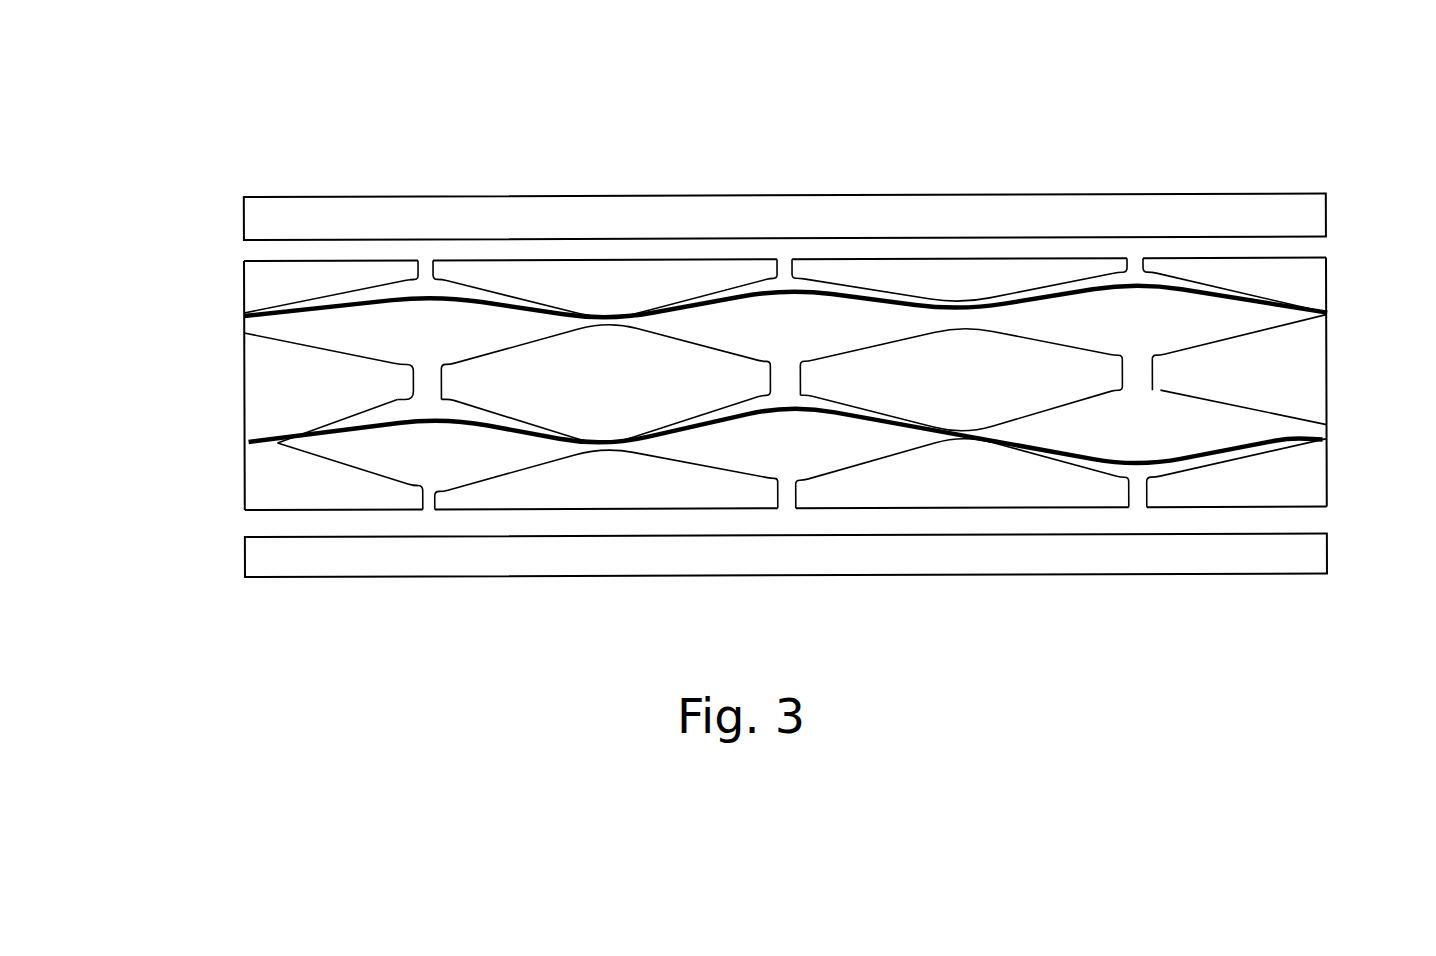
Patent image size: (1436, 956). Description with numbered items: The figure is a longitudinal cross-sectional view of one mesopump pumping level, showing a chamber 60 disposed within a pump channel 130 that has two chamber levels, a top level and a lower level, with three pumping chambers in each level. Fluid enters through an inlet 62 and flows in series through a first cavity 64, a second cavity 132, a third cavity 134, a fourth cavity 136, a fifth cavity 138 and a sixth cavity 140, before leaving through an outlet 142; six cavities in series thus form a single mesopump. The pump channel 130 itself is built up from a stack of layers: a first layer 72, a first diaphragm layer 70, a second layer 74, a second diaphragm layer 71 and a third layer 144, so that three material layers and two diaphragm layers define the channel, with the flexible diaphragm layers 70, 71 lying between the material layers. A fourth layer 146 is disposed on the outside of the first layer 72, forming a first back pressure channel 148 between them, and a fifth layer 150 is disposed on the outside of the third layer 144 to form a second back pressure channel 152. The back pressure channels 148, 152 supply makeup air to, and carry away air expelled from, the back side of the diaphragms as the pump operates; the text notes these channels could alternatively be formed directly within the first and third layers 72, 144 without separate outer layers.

The pump channel 130 is at (849, 100).
The chamber 60 is at (507, 295).
The inlet 62 is at (247, 327).
The first cavity 64 is at (313, 331).
The first diaphragm layer 70 is at (355, 312).
The second diaphragm layer 71 is at (373, 434).
The first layer 72 is at (257, 290).
The second layer 74 is at (265, 397).
The second cavity 132 is at (333, 428).
The third cavity 134 is at (763, 405).
The fourth cavity 136 is at (808, 317).
The fifth cavity 138 is at (1158, 315).
The sixth cavity 140 is at (1198, 438).
The outlet 142 is at (1313, 432).
The third layer 144 is at (260, 490).
The fourth layer 146 is at (272, 210).
The first back pressure channel 148 is at (262, 248).
The fifth layer 150 is at (255, 560).
The second back pressure channel 152 is at (263, 523).